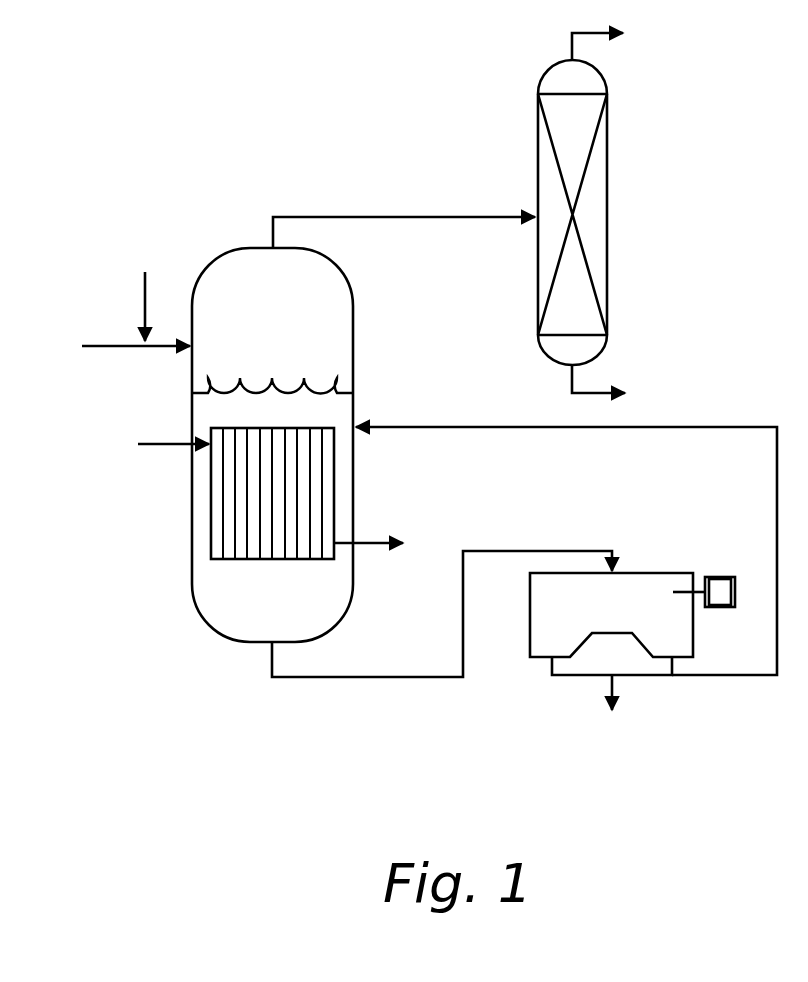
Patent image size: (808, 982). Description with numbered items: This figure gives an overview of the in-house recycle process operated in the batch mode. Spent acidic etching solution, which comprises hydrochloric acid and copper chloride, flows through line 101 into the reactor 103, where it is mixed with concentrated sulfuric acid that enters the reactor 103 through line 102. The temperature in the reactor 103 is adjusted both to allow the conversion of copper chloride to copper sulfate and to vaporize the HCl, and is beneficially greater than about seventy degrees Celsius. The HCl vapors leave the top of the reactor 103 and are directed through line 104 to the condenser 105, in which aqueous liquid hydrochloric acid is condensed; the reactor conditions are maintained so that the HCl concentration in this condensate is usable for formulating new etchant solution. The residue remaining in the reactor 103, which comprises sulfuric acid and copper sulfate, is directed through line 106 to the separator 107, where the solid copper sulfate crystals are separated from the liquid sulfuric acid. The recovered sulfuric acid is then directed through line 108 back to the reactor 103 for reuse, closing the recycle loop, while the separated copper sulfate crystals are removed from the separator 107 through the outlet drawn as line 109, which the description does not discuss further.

The line 101 is at (115, 339).
The line 102 is at (124, 294).
The reactor 103 is at (252, 311).
The line 104 is at (392, 217).
The condenser 105 is at (609, 116).
The line 106 is at (412, 677).
The separator 107 is at (648, 573).
The line 108 is at (750, 427).
The outlet line 109 is at (563, 677).